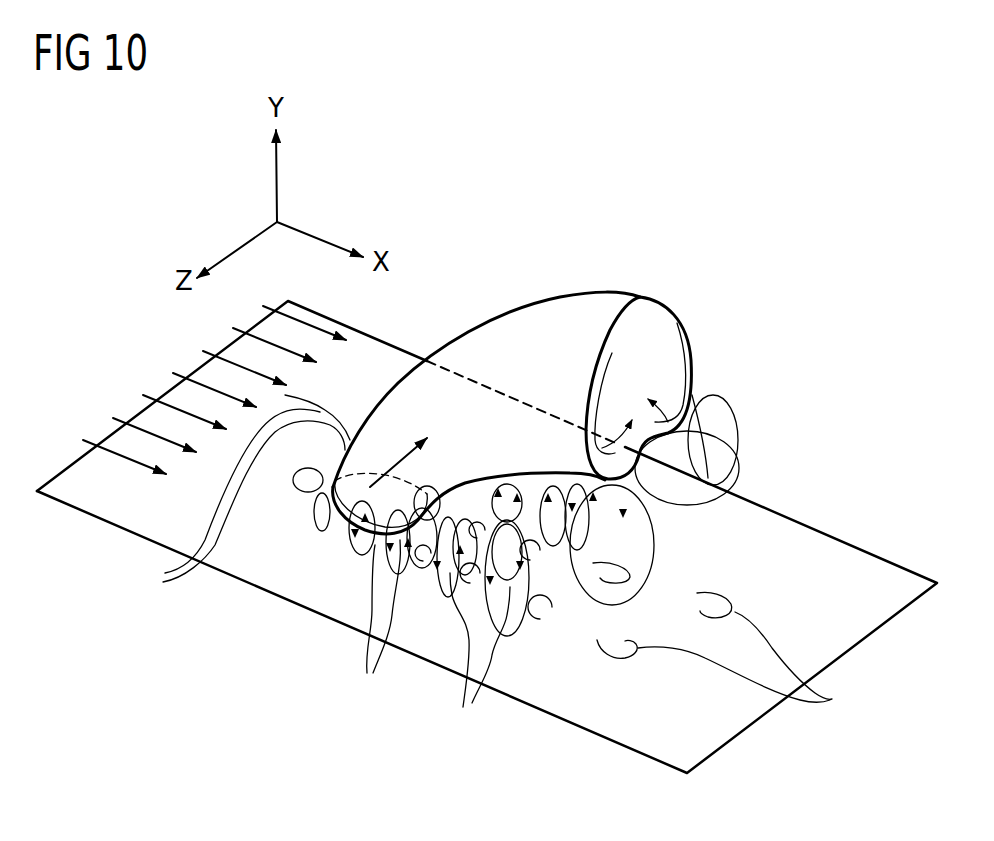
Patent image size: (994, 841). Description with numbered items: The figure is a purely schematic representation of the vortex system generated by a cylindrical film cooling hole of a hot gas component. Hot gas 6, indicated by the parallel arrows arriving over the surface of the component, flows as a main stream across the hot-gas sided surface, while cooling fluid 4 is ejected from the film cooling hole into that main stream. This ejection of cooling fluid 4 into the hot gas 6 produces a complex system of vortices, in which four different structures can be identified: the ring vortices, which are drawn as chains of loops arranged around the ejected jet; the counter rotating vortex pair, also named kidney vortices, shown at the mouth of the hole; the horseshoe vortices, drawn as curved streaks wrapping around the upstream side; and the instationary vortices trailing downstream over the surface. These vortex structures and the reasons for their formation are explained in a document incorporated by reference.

The cooling fluid 4 is at (393, 462).
The hot gas 6 is at (238, 365).